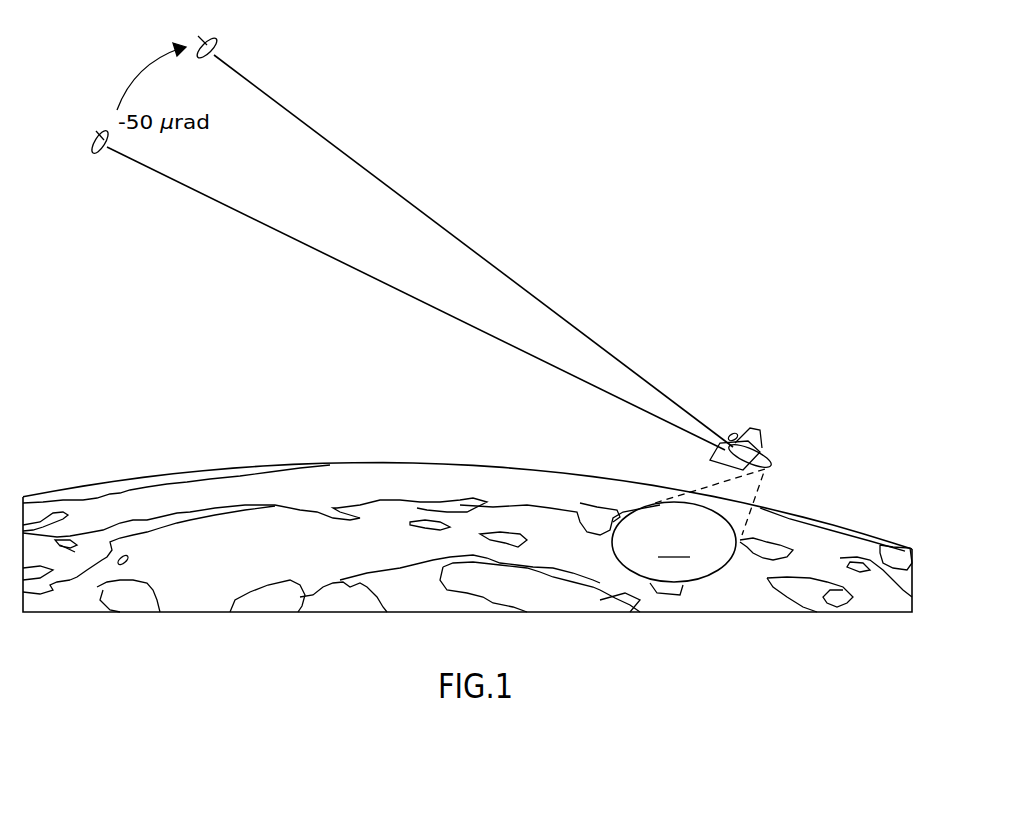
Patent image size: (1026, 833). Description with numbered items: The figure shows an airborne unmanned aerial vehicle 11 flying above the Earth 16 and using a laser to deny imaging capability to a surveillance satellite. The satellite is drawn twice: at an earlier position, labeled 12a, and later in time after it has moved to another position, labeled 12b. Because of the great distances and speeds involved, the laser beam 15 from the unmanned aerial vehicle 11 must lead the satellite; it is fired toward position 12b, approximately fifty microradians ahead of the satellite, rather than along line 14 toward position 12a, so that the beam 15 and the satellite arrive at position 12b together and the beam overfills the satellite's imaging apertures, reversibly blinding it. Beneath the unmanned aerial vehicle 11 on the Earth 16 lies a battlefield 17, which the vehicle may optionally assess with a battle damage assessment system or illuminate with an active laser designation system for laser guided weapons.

The unmanned aerial vehicle 11 is at (772, 459).
The surveillance satellite at first position 12a is at (95, 160).
The surveillance satellite at second position 12b is at (217, 44).
The line toward first position 14 is at (443, 311).
The laser beam 15 is at (512, 279).
The Earth 16 is at (203, 470).
The battlefield 17 is at (674, 542).